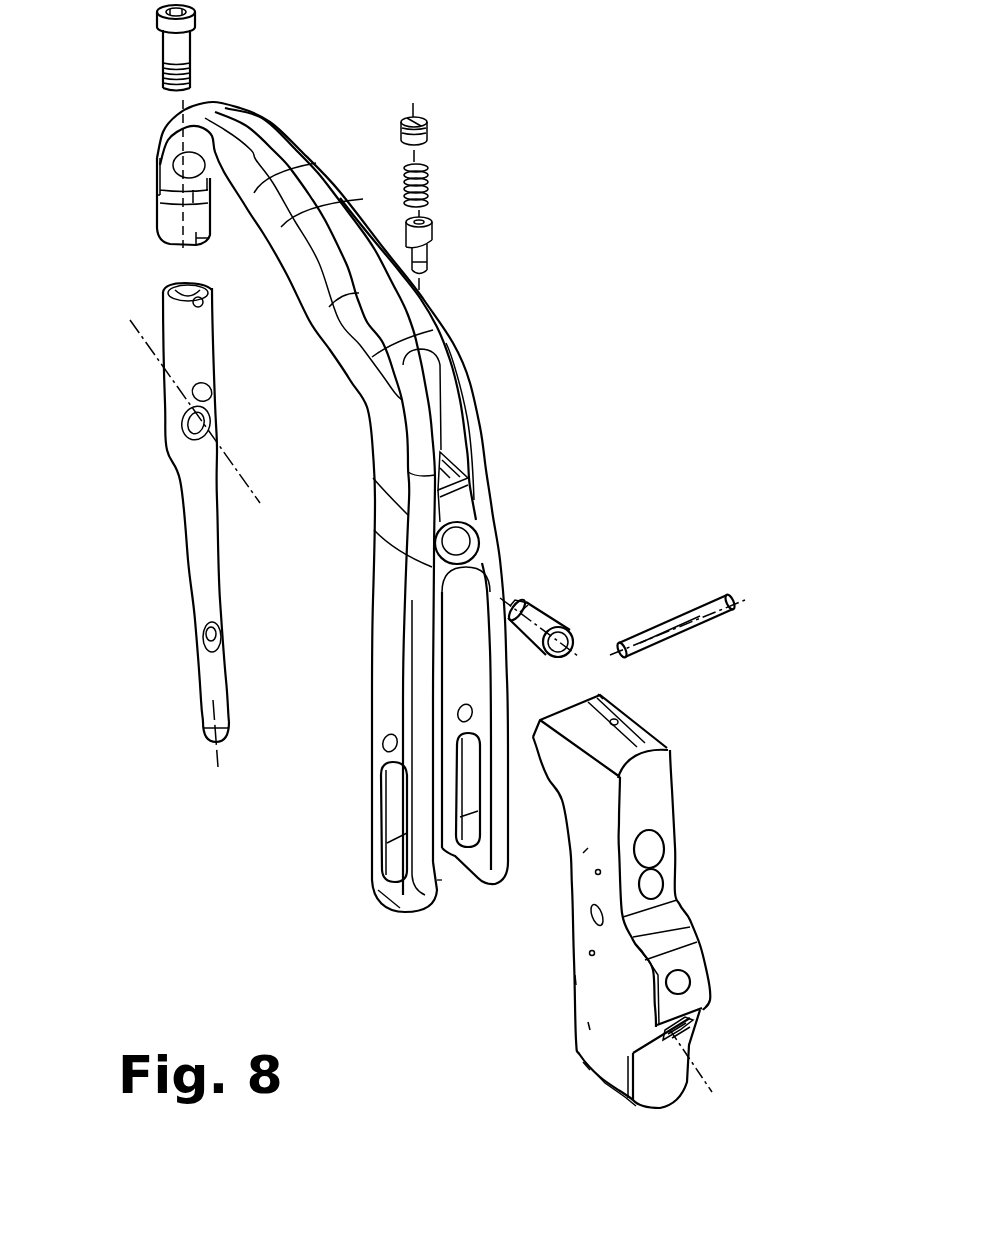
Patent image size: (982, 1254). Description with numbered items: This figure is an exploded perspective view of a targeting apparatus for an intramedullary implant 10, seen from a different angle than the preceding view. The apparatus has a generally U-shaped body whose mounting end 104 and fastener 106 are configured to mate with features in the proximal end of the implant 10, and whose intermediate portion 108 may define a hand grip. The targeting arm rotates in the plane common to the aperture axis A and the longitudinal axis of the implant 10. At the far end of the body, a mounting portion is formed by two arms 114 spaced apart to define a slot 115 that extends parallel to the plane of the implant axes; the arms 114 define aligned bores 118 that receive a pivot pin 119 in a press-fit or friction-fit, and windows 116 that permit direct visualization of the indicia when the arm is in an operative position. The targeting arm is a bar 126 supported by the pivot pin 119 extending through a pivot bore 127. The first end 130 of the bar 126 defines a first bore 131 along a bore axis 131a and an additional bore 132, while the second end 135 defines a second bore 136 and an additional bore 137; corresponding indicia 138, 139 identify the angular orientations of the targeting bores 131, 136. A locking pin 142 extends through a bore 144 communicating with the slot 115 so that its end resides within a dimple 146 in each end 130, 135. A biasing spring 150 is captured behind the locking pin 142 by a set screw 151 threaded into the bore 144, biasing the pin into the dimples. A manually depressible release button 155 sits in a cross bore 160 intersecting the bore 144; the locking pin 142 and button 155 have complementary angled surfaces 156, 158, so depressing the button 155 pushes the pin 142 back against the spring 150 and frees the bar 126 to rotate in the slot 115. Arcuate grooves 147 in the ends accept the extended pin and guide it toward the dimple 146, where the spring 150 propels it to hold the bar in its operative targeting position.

The intramedullary implant 10 is at (222, 529).
The aperture axis A is at (250, 490).
The mounting end 104 is at (167, 222).
The fastener 106 is at (195, 44).
The intermediate portion 108 is at (312, 165).
The arms 114 is at (477, 882).
The slot 115 is at (440, 893).
The windows 116 is at (470, 778).
The aligned bores 118 is at (384, 742).
The pivot pin 119 is at (697, 630).
The bar 126 is at (580, 980).
The pivot bore 127 is at (590, 917).
The first end 130 is at (587, 1067).
The first bore 131 is at (683, 1030).
The bore axis 131a is at (710, 1100).
The additional bore 132 is at (703, 1020).
The second end 135 is at (670, 762).
The second bore 136 is at (679, 908).
The additional bore 137 is at (682, 875).
The indicia 138 is at (588, 1026).
The indicia 139 is at (583, 853).
The locking pin 142 is at (424, 250).
The bore 144 is at (442, 455).
The dimple 146 is at (619, 722).
The arcuate grooves 147 is at (602, 696).
The biasing spring 150 is at (430, 175).
The set screw 151 is at (423, 122).
The release button 155 is at (553, 616).
The angled surface 156 is at (430, 224).
The angled surface 158 is at (552, 602).
The cross bore 160 is at (460, 542).